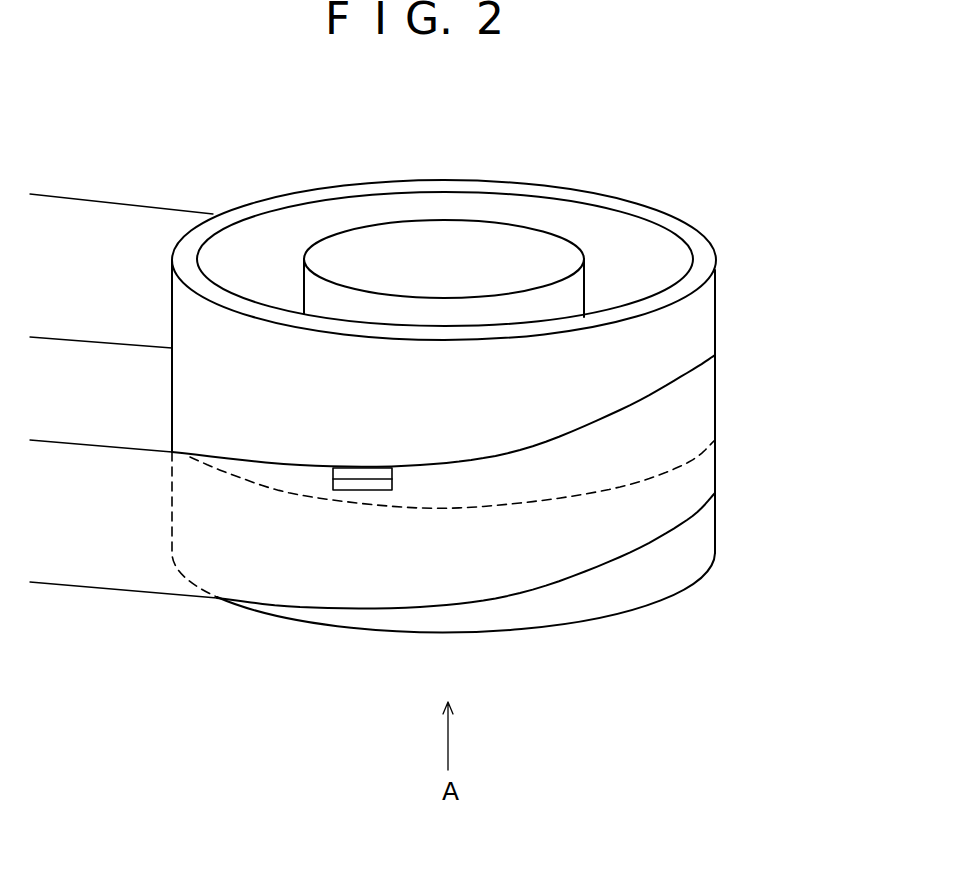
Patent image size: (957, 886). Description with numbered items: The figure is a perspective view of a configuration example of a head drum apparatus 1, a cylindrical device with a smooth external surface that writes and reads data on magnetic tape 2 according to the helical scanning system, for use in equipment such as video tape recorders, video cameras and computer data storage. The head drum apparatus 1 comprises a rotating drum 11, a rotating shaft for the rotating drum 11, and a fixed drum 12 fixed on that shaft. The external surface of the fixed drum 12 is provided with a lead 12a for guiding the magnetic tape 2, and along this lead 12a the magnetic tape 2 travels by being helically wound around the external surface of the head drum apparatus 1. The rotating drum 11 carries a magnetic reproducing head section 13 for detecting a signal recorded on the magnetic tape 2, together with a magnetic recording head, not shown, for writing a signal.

The head drum apparatus 1 is at (503, 412).
The magnetic tape 2 is at (150, 580).
The rotating drum 11 is at (286, 190).
The fixed drum 12 is at (567, 630).
The lead 12a is at (727, 482).
The magnetic reproducing head section 13 is at (352, 490).